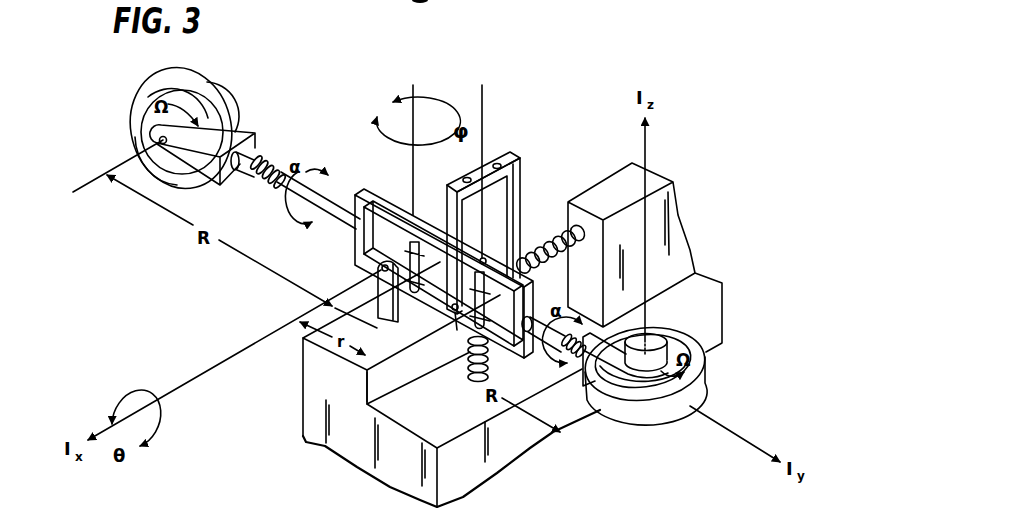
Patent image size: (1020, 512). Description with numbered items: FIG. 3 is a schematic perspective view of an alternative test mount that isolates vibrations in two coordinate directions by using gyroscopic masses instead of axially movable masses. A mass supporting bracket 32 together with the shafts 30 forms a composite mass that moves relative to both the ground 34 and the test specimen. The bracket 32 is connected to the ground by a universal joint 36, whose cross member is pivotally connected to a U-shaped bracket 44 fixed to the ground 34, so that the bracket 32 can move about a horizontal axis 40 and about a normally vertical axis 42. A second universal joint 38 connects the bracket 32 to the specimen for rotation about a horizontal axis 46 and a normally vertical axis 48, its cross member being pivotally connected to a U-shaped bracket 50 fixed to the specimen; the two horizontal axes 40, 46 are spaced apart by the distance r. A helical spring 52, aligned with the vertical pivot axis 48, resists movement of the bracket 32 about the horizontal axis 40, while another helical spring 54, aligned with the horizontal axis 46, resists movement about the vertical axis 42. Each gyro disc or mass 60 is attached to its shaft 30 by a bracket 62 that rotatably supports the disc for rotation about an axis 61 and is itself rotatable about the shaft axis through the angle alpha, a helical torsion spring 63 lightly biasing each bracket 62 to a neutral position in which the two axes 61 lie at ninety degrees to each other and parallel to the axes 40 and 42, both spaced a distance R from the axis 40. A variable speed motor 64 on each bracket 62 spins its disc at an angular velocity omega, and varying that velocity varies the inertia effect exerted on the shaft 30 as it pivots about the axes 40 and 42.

The shaft 30 is at (290, 194).
The mass supporting bracket 32 is at (366, 193).
The ground 34 is at (303, 380).
The universal joint 36 is at (408, 251).
The universal joint 38 is at (456, 323).
The horizontal axis 40 is at (253, 351).
The normally vertical axis 42 is at (416, 90).
The U-shaped bracket 44 is at (376, 290).
The horizontal axis 46 is at (383, 352).
The normally vertical axis 48 is at (485, 110).
The U-shaped bracket 50 is at (510, 160).
The helical spring 52 is at (466, 374).
The helical spring 54 is at (602, 231).
The gyroscopic mass 60 is at (137, 95).
The axis 61 is at (112, 164).
The bracket 62 is at (241, 124).
The helical torsion spring 63 is at (268, 165).
The variable speed motor 64 is at (228, 92).